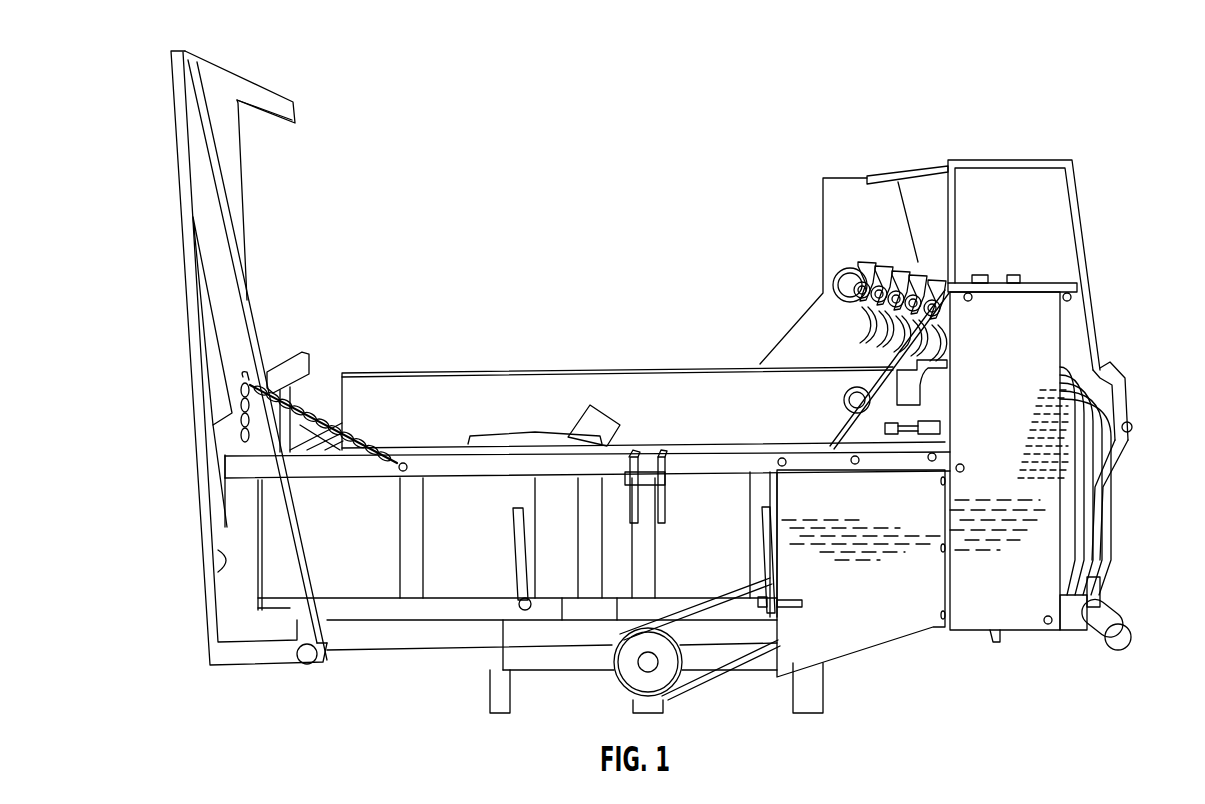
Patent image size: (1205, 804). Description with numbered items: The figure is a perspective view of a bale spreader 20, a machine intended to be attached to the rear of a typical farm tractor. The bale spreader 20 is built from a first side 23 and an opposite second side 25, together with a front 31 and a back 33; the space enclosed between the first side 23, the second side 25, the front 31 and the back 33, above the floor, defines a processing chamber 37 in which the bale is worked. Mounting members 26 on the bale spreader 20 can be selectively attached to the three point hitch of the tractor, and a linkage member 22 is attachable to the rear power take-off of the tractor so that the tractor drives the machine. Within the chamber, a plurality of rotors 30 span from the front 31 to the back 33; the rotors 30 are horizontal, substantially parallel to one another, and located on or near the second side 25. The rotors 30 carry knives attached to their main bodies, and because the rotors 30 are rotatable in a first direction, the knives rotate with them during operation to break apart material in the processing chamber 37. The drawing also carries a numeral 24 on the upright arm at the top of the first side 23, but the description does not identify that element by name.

The bale spreader 20 is at (805, 158).
The linkage member 22 is at (646, 664).
The first side 23 is at (237, 572).
The boom arm 24 is at (283, 108).
The second side 25 is at (1095, 298).
The mounting members 26 is at (507, 530).
The rotors 30 is at (855, 274).
The front 31 is at (463, 578).
The back 33 is at (647, 372).
The processing chamber 37 is at (516, 384).